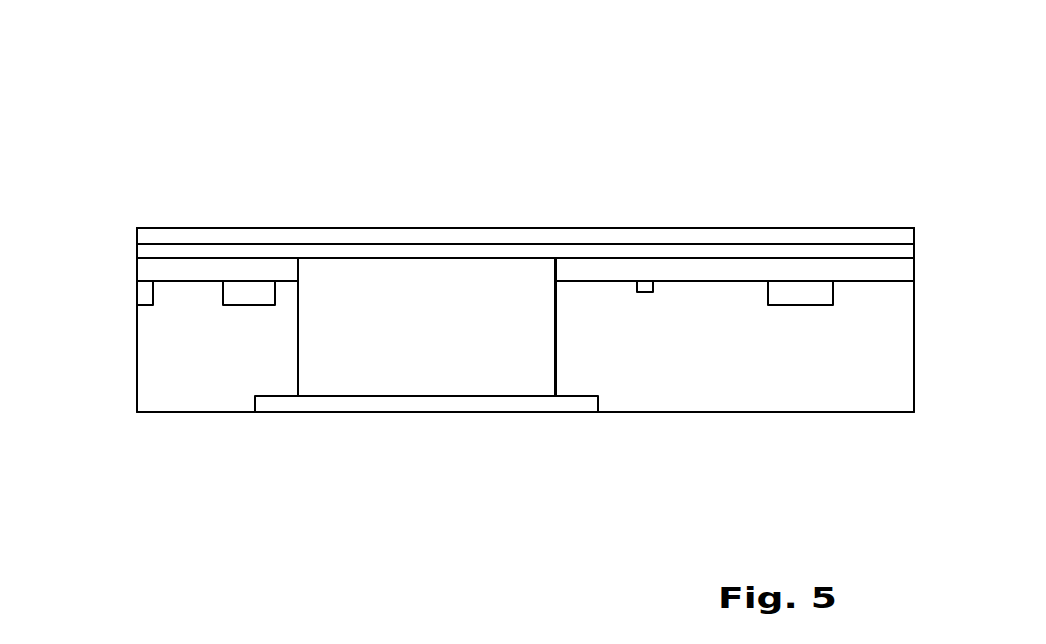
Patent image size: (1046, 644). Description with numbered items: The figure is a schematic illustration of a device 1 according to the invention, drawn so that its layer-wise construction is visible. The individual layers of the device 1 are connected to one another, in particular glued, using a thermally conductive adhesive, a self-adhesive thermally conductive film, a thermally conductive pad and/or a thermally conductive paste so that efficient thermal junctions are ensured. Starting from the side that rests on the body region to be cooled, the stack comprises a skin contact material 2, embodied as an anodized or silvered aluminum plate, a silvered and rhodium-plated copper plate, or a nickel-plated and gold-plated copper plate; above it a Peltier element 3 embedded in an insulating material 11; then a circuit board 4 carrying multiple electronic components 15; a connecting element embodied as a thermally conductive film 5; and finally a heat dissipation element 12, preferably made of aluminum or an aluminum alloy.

The device 1 is at (492, 137).
The skin contact material 2 is at (578, 403).
The Peltier element 3 is at (358, 307).
The circuit board 4 is at (160, 272).
The thermally conductive film 5 is at (207, 252).
The insulating material 11 is at (182, 335).
The heat dissipation element 12 is at (612, 237).
The electronic components 15 is at (250, 295).